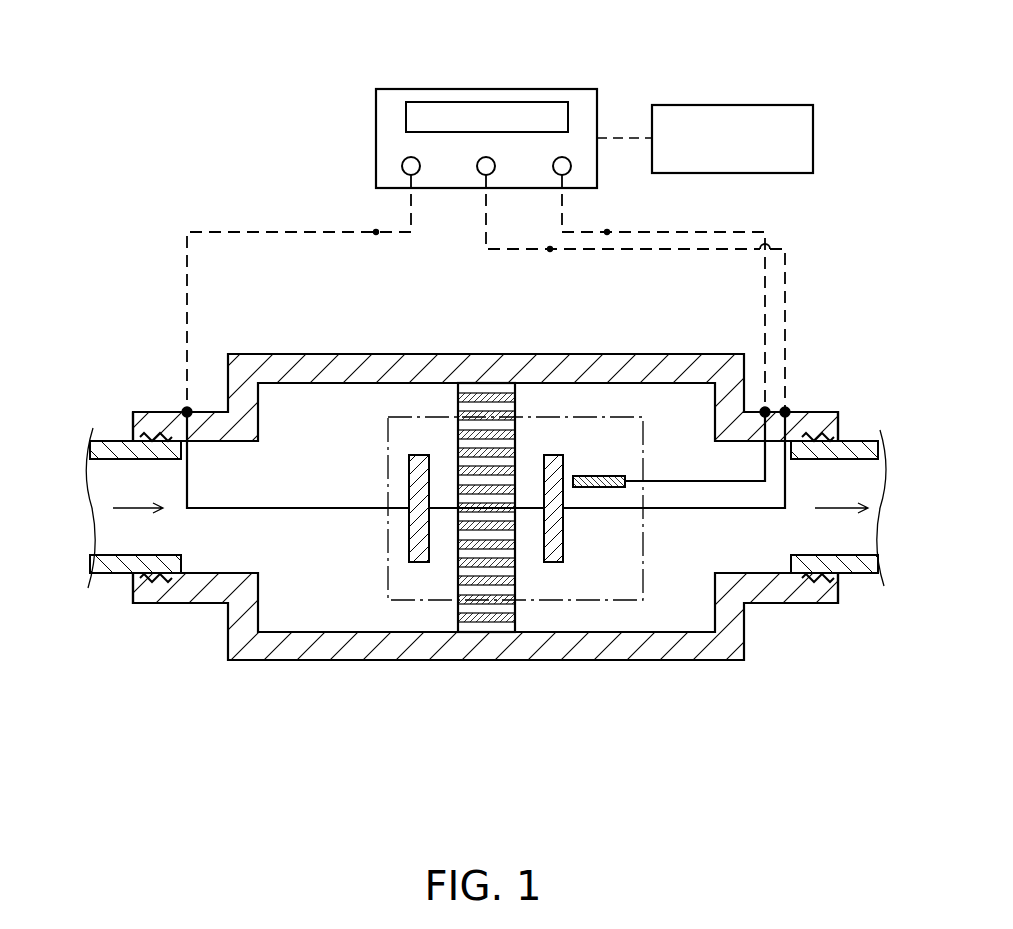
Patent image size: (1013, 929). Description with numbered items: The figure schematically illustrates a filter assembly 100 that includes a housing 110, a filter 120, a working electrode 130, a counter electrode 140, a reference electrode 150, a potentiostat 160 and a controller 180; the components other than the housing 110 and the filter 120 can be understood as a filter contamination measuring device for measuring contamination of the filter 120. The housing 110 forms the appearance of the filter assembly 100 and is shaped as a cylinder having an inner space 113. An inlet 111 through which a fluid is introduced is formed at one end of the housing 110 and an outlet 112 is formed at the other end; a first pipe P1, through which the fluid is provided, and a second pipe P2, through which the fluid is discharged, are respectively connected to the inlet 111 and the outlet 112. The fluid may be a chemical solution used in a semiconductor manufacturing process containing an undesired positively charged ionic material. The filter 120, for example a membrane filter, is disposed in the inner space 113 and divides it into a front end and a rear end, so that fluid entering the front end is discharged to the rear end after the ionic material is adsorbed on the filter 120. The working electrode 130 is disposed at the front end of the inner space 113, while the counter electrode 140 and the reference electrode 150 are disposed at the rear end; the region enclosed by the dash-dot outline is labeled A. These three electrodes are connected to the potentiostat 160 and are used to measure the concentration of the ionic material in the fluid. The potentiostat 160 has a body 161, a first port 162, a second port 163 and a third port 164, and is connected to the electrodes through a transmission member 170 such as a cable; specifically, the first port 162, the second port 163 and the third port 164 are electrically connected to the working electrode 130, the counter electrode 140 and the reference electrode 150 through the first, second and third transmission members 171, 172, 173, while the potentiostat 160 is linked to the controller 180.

The filter assembly 100 is at (486, 586).
The housing 110 is at (283, 650).
The inlet 111 is at (183, 598).
The outlet 112 is at (788, 597).
The inner space 113 is at (337, 599).
The filter 120 is at (490, 636).
The working electrode 130 is at (417, 566).
The counter electrode 140 is at (555, 566).
The reference electrode 150 is at (608, 491).
The potentiostat 160 is at (486, 113).
The body 161 is at (553, 89).
The first port 162 is at (417, 173).
The second port 163 is at (492, 173).
The third port 164 is at (568, 173).
The transmission member 170 is at (486, 293).
The first transmission member 171 is at (376, 232).
The second transmission member 172 is at (550, 249).
The third transmission member 173 is at (663, 293).
The controller 180 is at (770, 103).
The first pipe P1 is at (119, 567).
The second pipe P2 is at (857, 573).
The region A is at (650, 583).